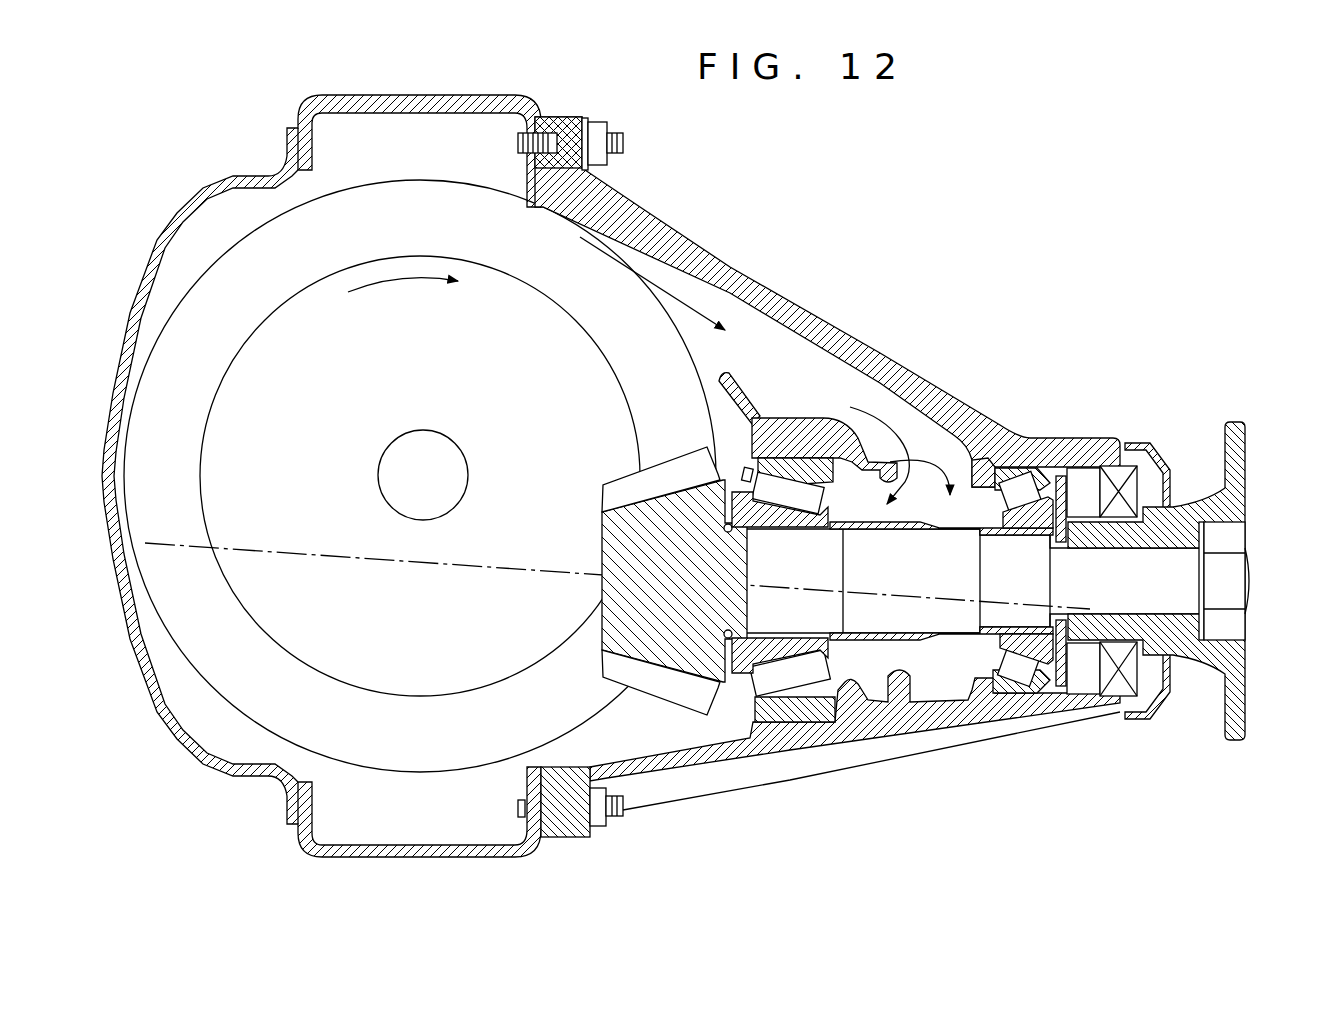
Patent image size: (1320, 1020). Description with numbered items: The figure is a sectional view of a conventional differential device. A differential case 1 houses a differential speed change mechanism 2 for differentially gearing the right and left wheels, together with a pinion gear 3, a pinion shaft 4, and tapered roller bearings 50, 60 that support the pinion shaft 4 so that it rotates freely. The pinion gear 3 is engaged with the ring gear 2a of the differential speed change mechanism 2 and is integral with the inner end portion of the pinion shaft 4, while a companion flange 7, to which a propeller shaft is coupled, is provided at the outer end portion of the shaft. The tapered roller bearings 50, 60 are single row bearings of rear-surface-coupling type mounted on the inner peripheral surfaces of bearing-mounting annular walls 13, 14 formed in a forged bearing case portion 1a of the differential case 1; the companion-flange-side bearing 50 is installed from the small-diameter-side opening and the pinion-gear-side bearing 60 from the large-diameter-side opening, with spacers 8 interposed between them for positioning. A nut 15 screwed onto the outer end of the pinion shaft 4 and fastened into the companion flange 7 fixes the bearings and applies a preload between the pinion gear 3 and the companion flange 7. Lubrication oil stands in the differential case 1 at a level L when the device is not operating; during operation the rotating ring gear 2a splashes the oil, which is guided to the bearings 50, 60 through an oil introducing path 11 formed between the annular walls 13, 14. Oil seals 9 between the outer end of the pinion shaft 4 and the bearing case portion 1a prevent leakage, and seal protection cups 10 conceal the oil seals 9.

The differential case 1 is at (178, 217).
The forged bearing case portion 1a is at (733, 270).
The differential speed change mechanism 2 is at (420, 476).
The ring gear 2a is at (435, 192).
The pinion gear 3 is at (675, 450).
The pinion shaft 4 is at (948, 617).
The companion flange 7 is at (1246, 450).
The spacers 8 is at (881, 643).
The oil seals 9 is at (1110, 693).
The seal protection cups 10 is at (1163, 700).
The oil introducing path 11 is at (857, 387).
The bearing-mounting annular wall 13 is at (983, 473).
The bearing-mounting annular wall 14 is at (803, 447).
The nut 15 is at (1233, 577).
The tapered roller bearing 50 is at (1023, 672).
The tapered roller bearing 60 is at (777, 690).
The oil level L is at (328, 548).